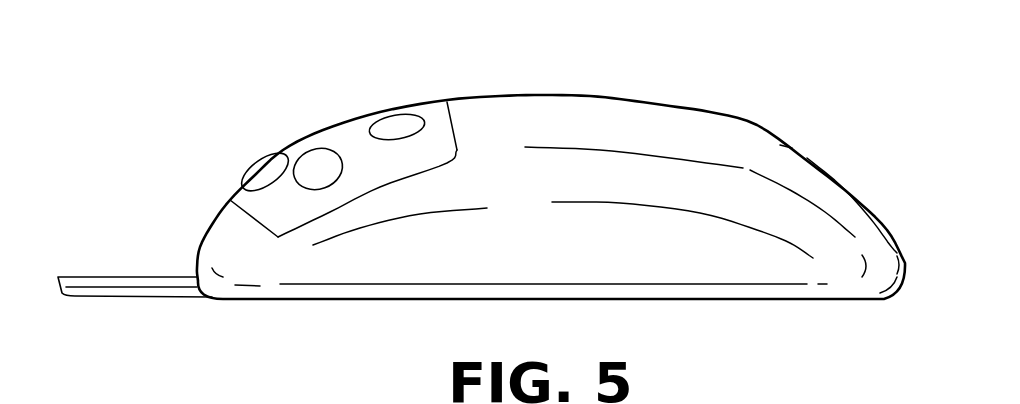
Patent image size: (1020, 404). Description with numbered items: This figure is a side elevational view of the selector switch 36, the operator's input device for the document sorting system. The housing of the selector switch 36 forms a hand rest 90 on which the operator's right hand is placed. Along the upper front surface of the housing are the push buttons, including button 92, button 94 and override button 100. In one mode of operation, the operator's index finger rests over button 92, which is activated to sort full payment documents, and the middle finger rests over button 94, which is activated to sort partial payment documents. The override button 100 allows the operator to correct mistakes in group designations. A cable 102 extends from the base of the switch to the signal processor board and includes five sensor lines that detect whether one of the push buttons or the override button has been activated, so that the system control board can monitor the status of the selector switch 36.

The selector switch 36 is at (584, 89).
The hand rest 90 is at (760, 140).
The button 92 is at (322, 157).
The button 94 is at (276, 166).
The override button 100 is at (402, 123).
The cable 102 is at (155, 285).